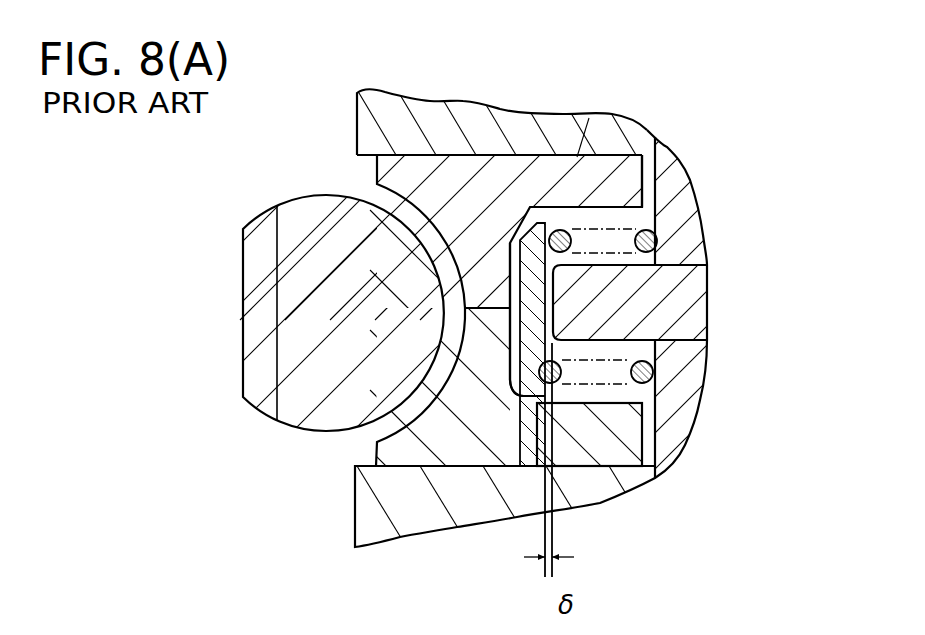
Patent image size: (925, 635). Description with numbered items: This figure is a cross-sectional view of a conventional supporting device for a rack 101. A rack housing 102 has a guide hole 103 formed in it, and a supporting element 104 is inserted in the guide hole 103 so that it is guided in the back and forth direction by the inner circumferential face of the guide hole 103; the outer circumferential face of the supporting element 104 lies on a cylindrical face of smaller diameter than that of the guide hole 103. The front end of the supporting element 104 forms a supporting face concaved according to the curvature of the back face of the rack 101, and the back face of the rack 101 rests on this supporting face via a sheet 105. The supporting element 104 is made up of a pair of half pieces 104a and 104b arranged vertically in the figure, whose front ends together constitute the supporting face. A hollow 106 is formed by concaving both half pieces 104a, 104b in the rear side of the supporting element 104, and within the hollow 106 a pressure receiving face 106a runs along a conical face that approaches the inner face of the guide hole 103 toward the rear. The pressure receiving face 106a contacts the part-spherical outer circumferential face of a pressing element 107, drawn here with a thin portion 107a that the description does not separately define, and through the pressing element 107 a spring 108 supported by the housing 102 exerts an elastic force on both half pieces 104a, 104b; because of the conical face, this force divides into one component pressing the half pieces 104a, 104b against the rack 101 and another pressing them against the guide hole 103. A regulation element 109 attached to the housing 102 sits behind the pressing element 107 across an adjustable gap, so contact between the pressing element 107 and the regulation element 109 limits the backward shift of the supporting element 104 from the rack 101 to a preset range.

The rack 101 is at (307, 218).
The rack housing 102 is at (494, 115).
The guide hole 103 is at (589, 118).
The supporting element 104 is at (632, 155).
The half piece 104a is at (630, 185).
The half piece 104b is at (638, 428).
The sheet 105 is at (373, 437).
The hollow 106 is at (618, 211).
The pressure receiving face 106a is at (520, 392).
The pressing element 107 is at (533, 296).
The sleeve plate 107a is at (517, 223).
The spring 108 is at (655, 380).
The regulation element 109 is at (690, 297).